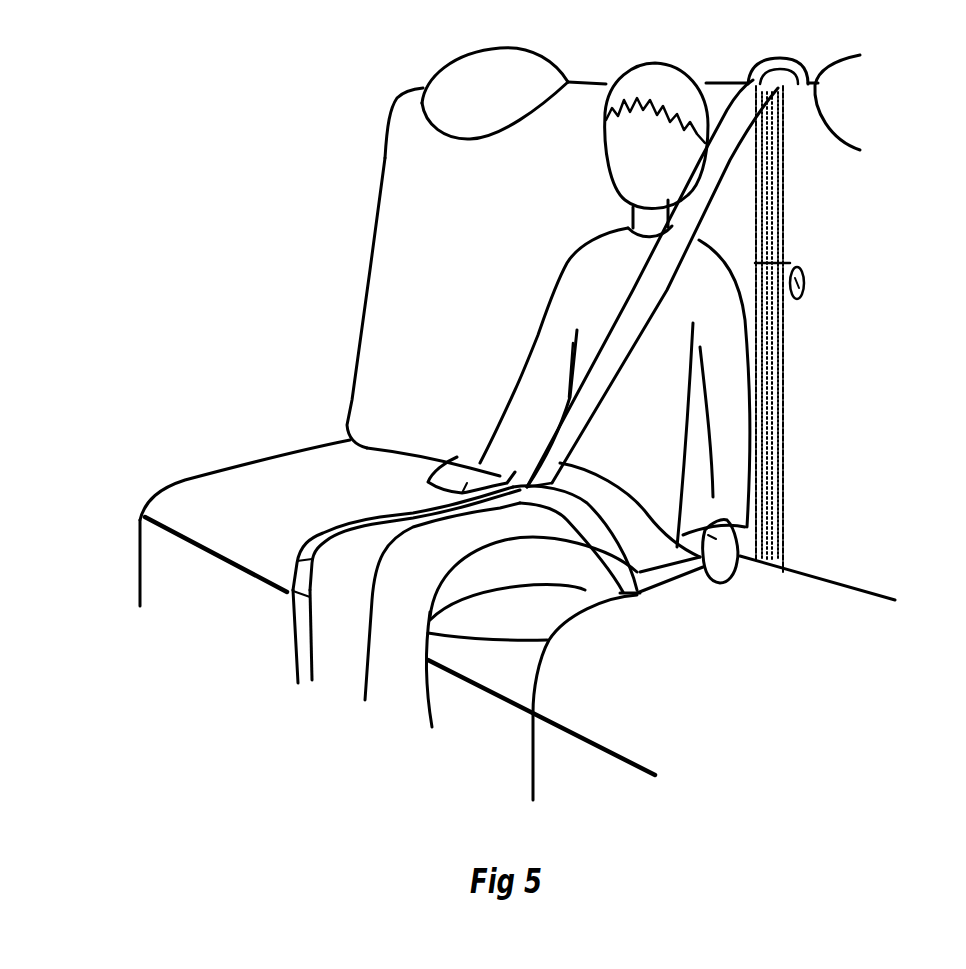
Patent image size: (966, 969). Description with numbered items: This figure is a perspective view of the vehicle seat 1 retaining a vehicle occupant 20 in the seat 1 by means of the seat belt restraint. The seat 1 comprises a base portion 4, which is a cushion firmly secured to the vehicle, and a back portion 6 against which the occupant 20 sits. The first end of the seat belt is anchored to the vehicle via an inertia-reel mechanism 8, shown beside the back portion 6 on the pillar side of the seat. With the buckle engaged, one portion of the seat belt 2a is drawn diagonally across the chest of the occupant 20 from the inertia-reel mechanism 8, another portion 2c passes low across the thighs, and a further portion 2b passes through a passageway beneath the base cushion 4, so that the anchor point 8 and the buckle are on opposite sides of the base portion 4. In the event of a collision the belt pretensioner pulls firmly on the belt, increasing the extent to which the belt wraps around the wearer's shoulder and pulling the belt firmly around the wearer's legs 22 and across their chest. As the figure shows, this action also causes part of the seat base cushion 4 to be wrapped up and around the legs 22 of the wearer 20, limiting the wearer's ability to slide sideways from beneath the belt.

The vehicle seat 1 is at (325, 326).
The back portion 6 is at (573, 217).
The portion of the seat belt drawn across the chest 2a is at (730, 150).
The portion of the seat belt passing beneath the seat 2b is at (650, 600).
The portion of the seat belt passing across the thighs 2c is at (540, 487).
The base portion 4 is at (578, 585).
The inertia-reel mechanism 8 is at (807, 272).
The vehicle occupant 20 is at (742, 482).
The legs 22 is at (360, 547).